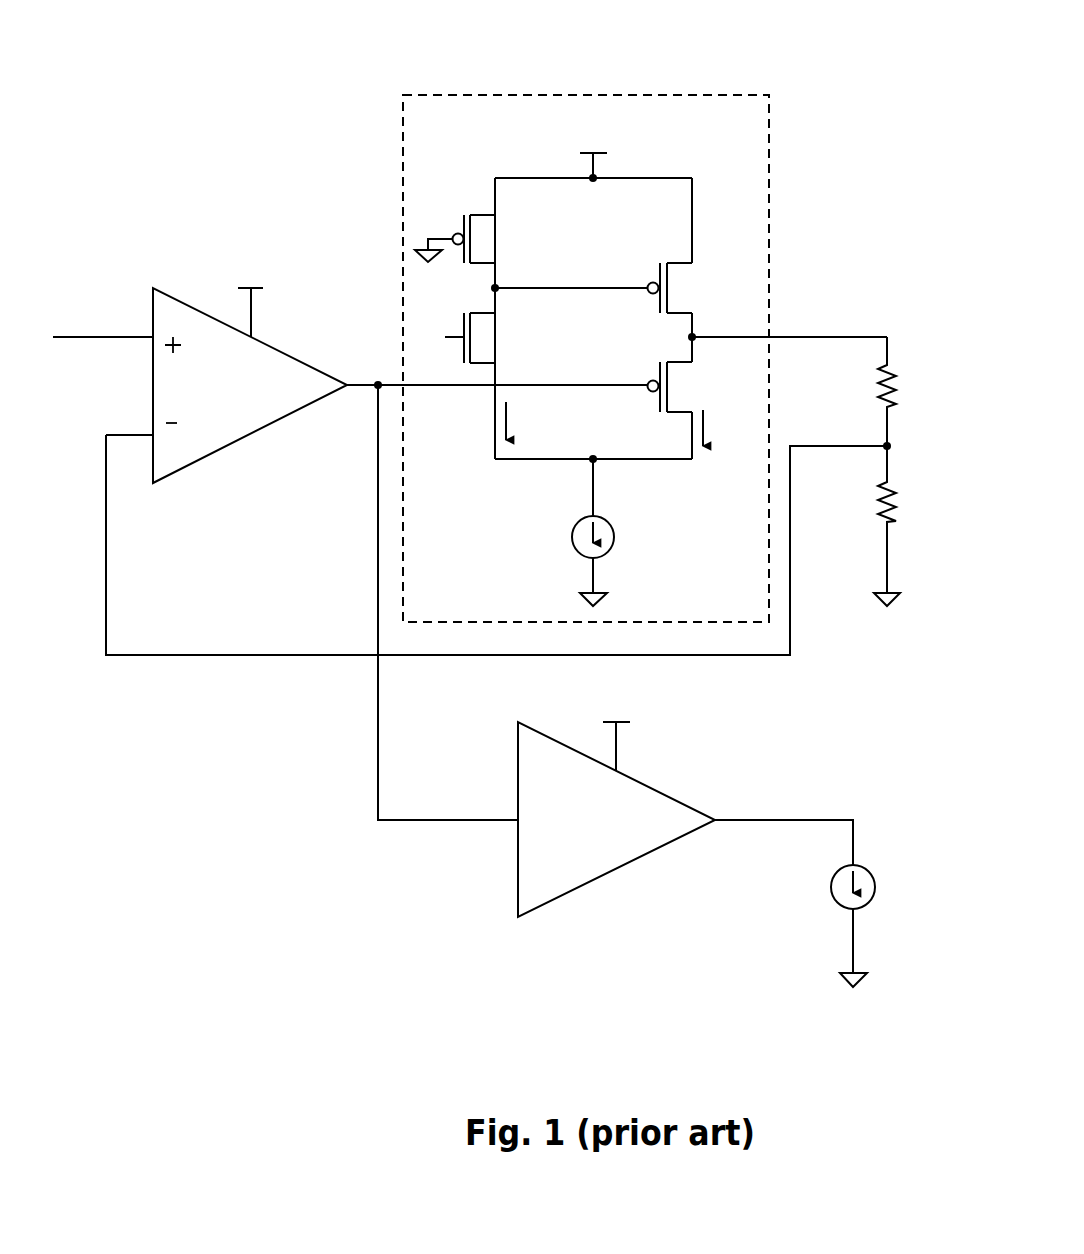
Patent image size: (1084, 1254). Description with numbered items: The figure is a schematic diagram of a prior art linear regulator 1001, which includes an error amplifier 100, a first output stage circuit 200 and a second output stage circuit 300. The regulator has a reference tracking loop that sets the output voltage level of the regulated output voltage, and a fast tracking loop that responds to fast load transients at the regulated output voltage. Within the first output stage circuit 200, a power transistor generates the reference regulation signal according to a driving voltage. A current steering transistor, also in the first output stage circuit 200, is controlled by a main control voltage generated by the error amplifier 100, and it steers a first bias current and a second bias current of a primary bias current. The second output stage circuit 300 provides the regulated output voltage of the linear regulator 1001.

The linear regulator 1001 is at (323, 67).
The error amplifier 100 is at (257, 432).
The first output stage circuit 200 is at (732, 95).
The second output stage circuit 300 is at (622, 868).